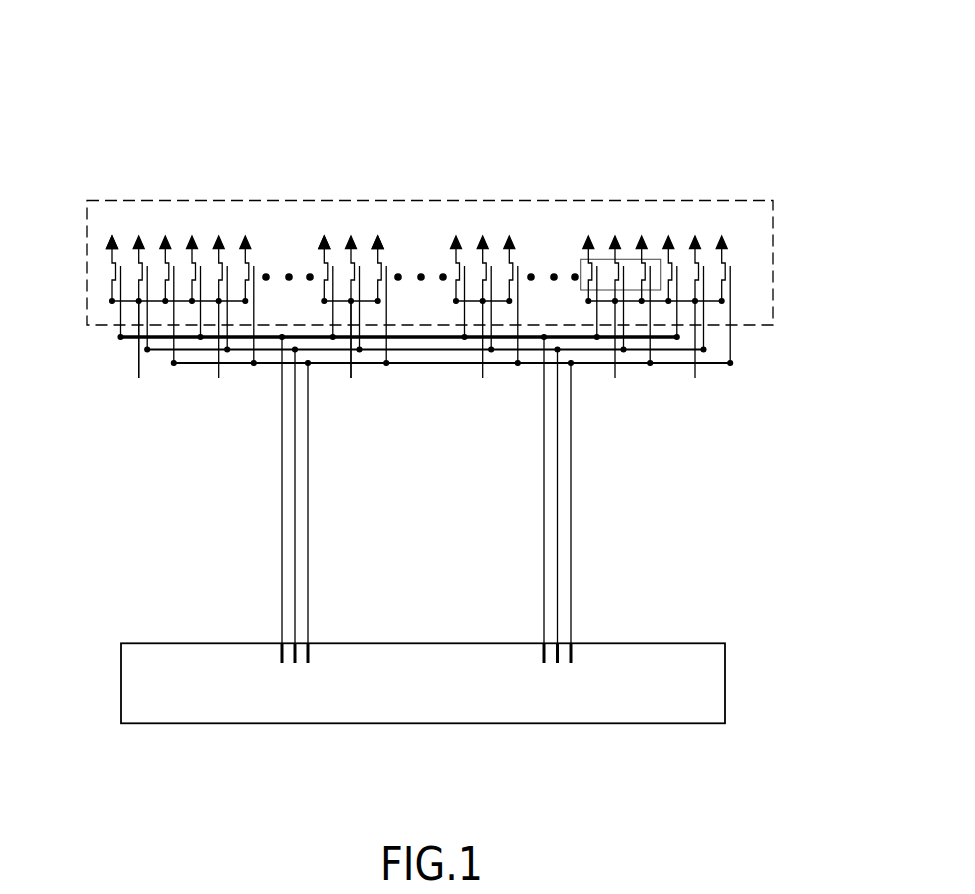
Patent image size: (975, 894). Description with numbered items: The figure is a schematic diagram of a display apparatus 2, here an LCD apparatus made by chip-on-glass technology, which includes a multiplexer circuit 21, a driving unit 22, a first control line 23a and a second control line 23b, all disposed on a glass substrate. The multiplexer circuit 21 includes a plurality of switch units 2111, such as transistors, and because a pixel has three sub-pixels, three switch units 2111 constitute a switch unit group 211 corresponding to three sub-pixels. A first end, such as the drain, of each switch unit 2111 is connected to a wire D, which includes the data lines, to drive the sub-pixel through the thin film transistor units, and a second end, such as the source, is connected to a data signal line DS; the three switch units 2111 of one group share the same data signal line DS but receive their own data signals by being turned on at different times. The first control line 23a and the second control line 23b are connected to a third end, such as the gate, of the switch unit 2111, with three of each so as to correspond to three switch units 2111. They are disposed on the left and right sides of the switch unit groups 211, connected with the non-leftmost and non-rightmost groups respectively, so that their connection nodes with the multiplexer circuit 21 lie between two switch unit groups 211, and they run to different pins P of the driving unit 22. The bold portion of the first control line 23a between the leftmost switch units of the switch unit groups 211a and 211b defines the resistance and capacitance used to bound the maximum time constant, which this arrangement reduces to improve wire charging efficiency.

The display apparatus 2 is at (158, 74).
The multiplexer circuit 21 is at (211, 200).
The switch unit group 211 is at (601, 258).
The switch unit group 211a is at (92, 302).
The switch unit group 211b is at (707, 218).
The switch unit 2111 is at (515, 266).
The driving unit 22 is at (726, 685).
The first control line 23a is at (268, 456).
The second control line 23b is at (586, 455).
The wire D is at (379, 265).
The data signal line DS is at (367, 405).
The pin P is at (540, 655).